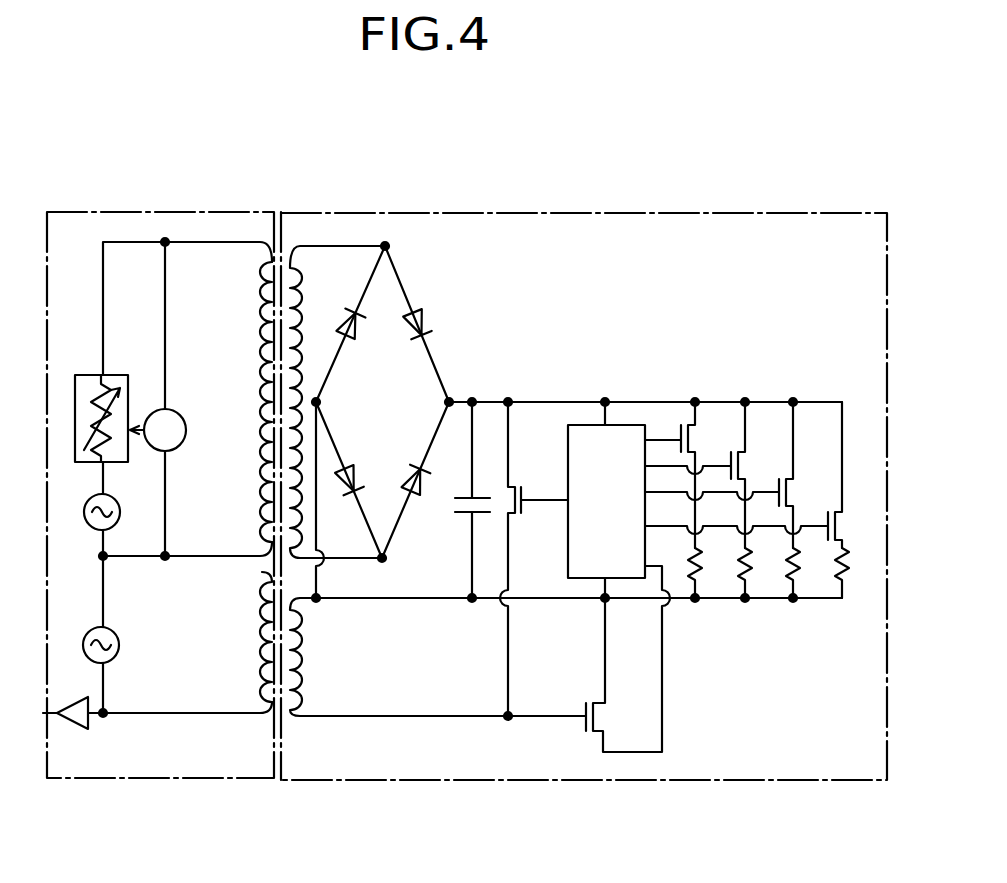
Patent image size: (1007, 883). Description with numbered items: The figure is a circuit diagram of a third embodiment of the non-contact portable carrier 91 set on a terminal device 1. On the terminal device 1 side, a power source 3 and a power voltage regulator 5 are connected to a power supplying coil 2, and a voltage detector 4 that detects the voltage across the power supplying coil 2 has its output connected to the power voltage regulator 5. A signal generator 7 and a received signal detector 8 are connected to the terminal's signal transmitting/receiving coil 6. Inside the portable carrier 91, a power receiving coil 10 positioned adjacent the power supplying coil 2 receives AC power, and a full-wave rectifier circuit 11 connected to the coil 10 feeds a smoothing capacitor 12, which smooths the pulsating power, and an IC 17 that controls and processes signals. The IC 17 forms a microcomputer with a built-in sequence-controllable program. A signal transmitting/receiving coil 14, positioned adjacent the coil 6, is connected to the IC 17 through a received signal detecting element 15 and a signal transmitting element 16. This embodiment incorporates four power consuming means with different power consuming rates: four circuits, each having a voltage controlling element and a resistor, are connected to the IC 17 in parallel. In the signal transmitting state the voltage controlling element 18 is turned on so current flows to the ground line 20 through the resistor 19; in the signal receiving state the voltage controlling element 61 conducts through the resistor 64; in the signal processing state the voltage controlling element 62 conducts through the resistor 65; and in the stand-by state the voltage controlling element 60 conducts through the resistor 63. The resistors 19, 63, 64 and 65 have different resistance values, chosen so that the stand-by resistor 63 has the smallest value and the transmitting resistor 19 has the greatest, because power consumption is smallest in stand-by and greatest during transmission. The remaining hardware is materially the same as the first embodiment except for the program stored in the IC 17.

The terminal device 1 is at (192, 212).
The power supplying coil 2 is at (250, 478).
The power source 3 is at (88, 527).
The voltage detector 4 is at (183, 418).
The power voltage regulator 5 is at (86, 375).
The signal transmitting/receiving coil 6 is at (250, 672).
The signal generator 7 is at (115, 656).
The received signal detector 8 is at (84, 731).
The power receiving coil 10 is at (308, 265).
The full-wave rectifier circuit 11 is at (432, 316).
The smoothing capacitor 12 is at (458, 514).
The signal transmitting/receiving coil 14 is at (306, 696).
The received signal detecting element 15 is at (583, 729).
The signal transmitting element 16 is at (514, 522).
The IC 17 is at (568, 446).
The voltage controlling element 18 is at (692, 446).
The resistor 19 is at (699, 573).
The ground line 20 is at (800, 602).
The voltage controlling element 60 is at (741, 470).
The voltage controlling element 61 is at (790, 500).
The voltage controlling element 62 is at (842, 516).
The resistor 63 is at (753, 573).
The resistor 64 is at (804, 576).
The resistor 65 is at (850, 564).
The non-contact portable carrier 91 is at (626, 212).